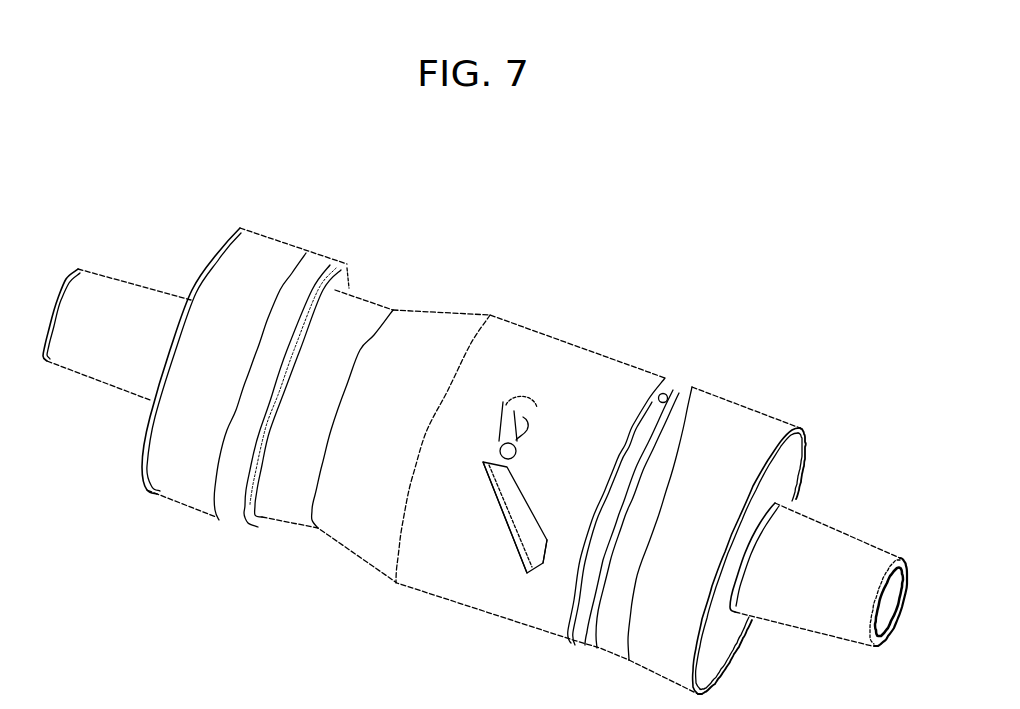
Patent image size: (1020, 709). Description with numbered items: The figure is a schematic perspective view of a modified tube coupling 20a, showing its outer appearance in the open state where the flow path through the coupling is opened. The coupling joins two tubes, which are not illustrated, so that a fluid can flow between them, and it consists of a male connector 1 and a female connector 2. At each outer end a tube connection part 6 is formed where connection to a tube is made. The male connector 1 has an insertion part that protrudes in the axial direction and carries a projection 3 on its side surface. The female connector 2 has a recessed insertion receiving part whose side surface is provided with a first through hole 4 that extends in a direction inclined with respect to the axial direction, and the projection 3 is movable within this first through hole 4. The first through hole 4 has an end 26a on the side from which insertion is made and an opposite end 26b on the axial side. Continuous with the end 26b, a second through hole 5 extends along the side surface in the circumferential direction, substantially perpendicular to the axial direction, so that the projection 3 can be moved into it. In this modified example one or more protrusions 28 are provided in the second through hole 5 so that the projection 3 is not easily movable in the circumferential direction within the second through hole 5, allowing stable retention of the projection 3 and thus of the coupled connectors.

The roller assembly 20a is at (619, 245).
The male connector 1 is at (737, 421).
The female connector 2 is at (357, 315).
The projection 3 is at (508, 437).
The first through hole 4 is at (515, 518).
The second through hole 5 is at (519, 406).
The tube connection part 6 is at (112, 362).
The protrusion 28 is at (527, 420).
The end of first through hole 26a is at (537, 572).
The end of first through hole 26b is at (496, 468).